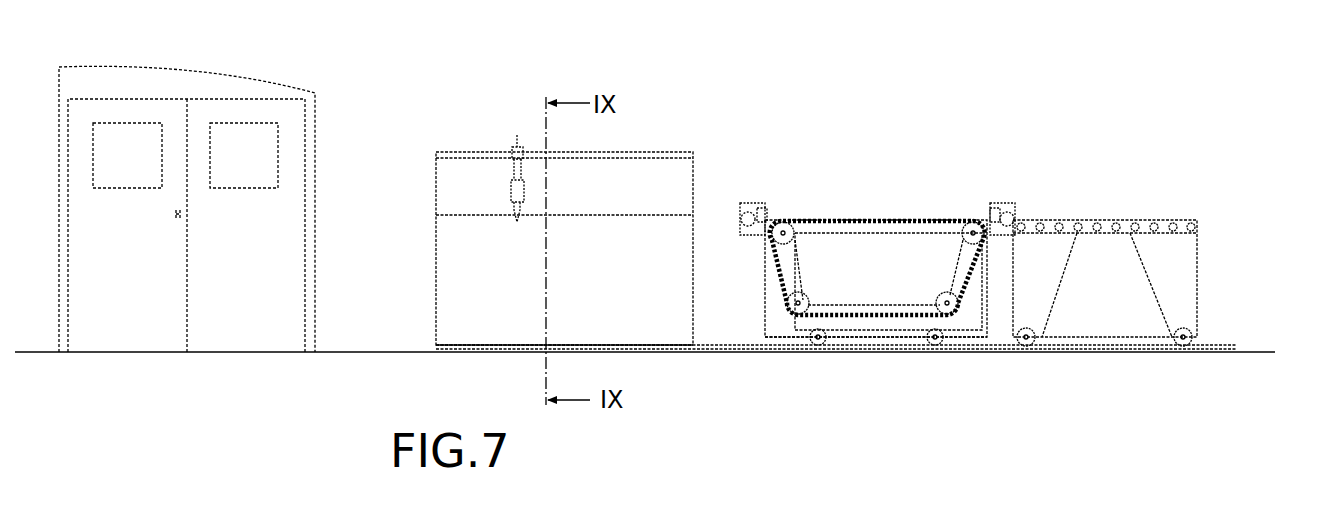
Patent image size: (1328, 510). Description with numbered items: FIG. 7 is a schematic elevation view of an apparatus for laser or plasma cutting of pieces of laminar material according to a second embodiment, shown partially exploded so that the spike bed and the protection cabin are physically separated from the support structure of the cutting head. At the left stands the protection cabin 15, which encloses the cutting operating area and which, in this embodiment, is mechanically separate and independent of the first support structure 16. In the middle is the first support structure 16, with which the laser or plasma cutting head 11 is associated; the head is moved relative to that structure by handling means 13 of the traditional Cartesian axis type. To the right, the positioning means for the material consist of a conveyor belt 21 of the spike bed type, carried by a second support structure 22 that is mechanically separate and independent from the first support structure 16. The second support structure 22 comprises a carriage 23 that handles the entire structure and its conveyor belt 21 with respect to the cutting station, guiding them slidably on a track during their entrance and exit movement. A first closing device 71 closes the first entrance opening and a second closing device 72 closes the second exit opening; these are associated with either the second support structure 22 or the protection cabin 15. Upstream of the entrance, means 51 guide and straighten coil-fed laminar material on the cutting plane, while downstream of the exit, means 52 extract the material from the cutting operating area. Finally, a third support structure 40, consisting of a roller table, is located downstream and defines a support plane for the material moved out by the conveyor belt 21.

The protection cabin 15 is at (353, 85).
The handling means 13 is at (627, 152).
The first support structure 16 is at (435, 318).
The laser or plasma cutting head 11 is at (510, 195).
The conveyor belt 21 is at (893, 218).
The second support structure 22 is at (863, 335).
The carriage 23 is at (933, 346).
The means for guiding and straightening 51 is at (744, 202).
The first closing device 71 is at (767, 212).
The second closing device 72 is at (992, 202).
The means for extracting 52 is at (1015, 213).
The third support structure 40 is at (1205, 267).